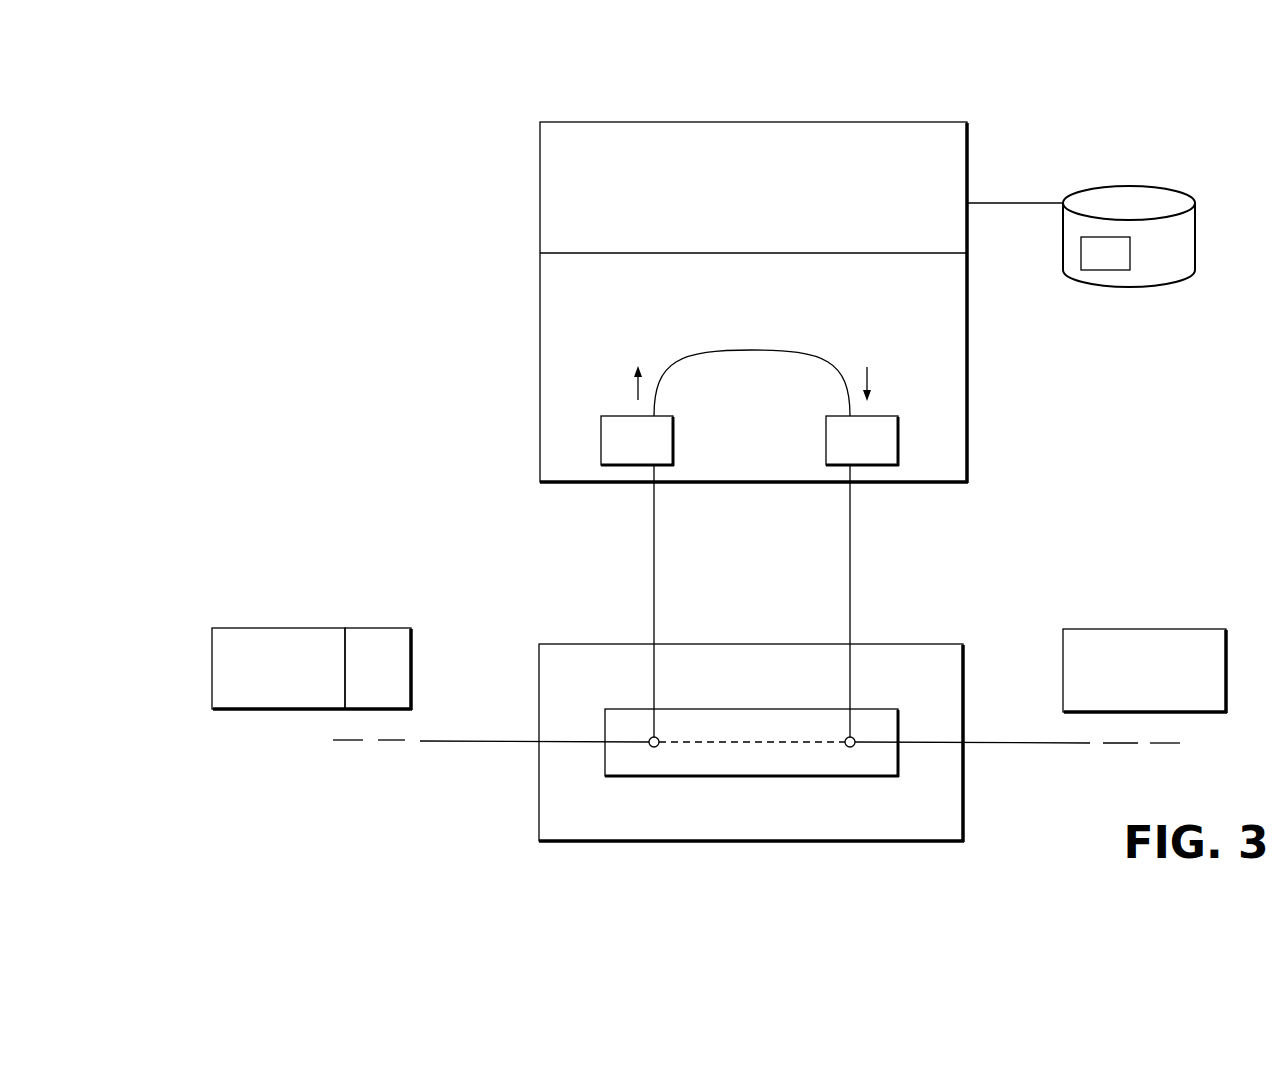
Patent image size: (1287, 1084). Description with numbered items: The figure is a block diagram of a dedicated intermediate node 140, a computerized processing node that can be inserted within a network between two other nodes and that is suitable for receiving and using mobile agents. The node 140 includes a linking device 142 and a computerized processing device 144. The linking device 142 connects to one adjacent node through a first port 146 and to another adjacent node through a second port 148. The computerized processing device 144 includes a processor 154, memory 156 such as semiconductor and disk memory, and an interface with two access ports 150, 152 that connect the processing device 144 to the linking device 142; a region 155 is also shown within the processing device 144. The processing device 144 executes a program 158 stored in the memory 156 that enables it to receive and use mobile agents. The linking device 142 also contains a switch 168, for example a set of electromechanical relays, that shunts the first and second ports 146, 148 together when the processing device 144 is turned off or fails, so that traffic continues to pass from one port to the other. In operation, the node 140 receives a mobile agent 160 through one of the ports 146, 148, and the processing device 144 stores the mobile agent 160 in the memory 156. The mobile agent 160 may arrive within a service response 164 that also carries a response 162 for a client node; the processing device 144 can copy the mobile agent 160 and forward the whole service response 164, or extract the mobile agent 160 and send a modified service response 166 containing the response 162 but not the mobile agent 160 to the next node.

The dedicated intermediate node 140 is at (1230, 81).
The linking device 142 is at (966, 828).
The computerized processing device 144 is at (967, 420).
The first port 146 is at (522, 742).
The second port 148 is at (978, 743).
The access port 150 is at (619, 451).
The access port 152 is at (844, 451).
The processor 154 is at (733, 198).
The processing module 155 is at (733, 313).
The memory 156 is at (1162, 286).
The program 158 is at (1130, 253).
The mobile agent 160 is at (229, 563).
The response 162 is at (243, 628).
The service response 164 is at (312, 601).
The modified service response 166 is at (1147, 629).
The switch 168 is at (833, 777).